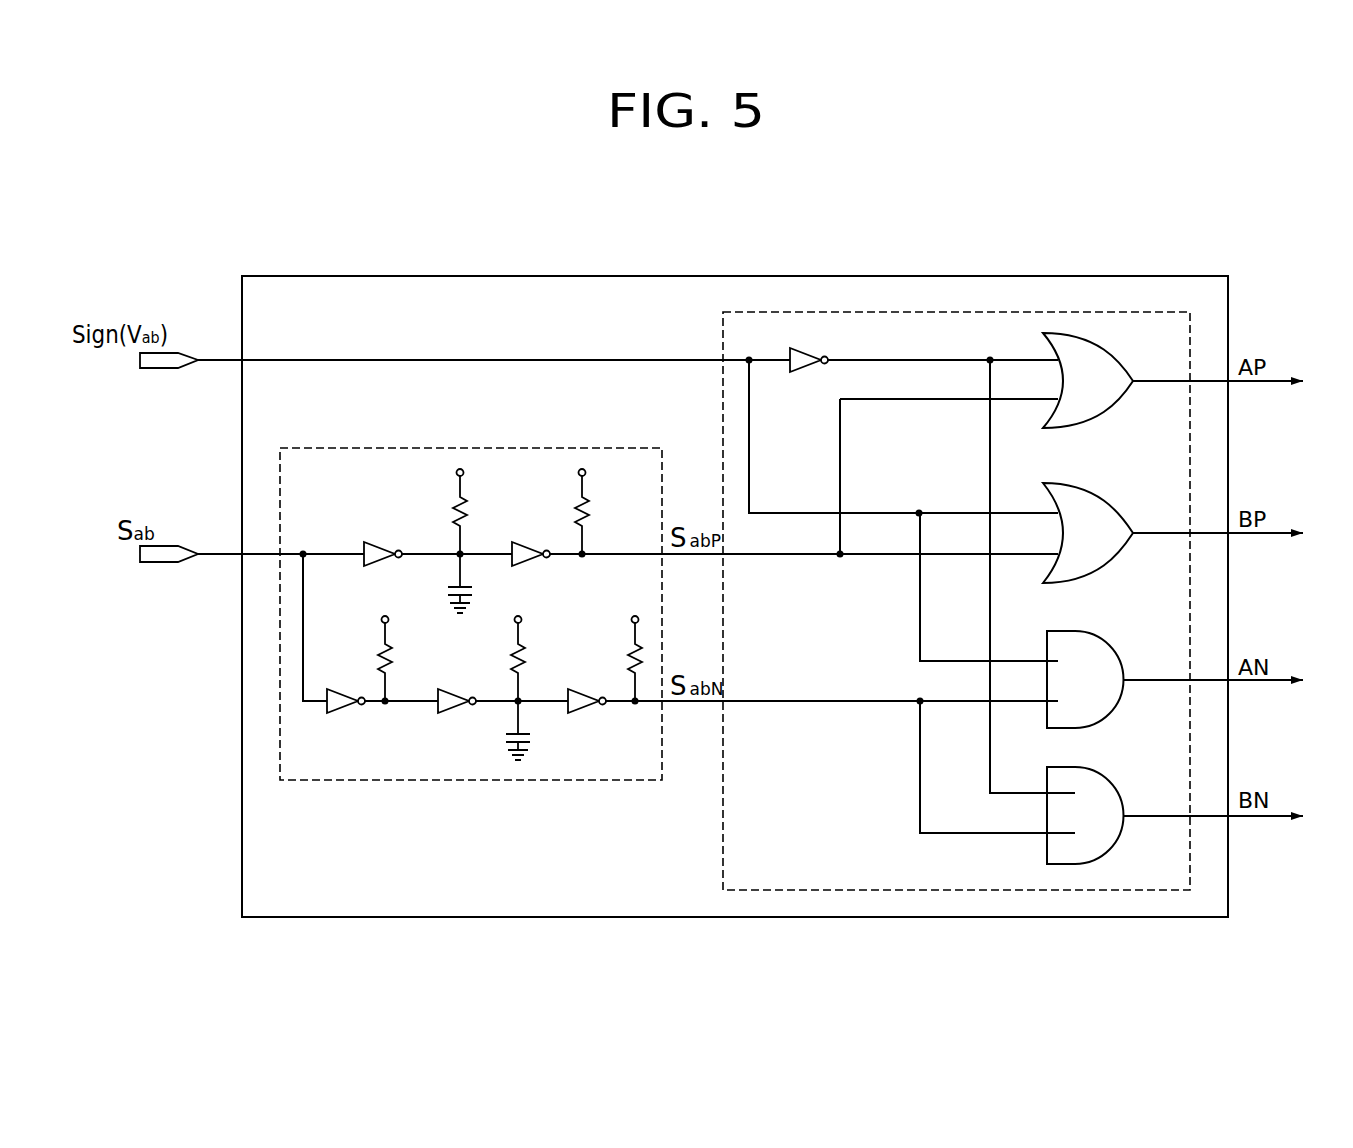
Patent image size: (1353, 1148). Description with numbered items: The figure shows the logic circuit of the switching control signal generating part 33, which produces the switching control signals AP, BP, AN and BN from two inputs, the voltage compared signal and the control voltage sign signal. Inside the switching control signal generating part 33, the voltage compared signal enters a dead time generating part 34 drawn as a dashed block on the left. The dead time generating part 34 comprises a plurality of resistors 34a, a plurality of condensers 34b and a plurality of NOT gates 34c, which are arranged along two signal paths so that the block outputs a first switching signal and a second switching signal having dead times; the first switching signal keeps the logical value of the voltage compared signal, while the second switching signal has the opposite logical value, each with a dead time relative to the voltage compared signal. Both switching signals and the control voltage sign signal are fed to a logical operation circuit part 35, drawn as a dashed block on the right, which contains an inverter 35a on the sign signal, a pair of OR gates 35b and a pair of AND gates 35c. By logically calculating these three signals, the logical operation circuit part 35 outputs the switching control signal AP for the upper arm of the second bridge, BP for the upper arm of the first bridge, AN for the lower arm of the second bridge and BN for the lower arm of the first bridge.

The switching control signal generating part 33 is at (683, 276).
The dead time generating part 34 is at (488, 447).
The resistors 34a is at (468, 519).
The condensers 34b is at (447, 591).
The NOT gates 34c is at (378, 545).
The logical operation circuit part 35 is at (948, 311).
The inverter 35a is at (805, 356).
The OR gates 35b is at (1136, 400).
The AND gates 35c is at (1124, 712).